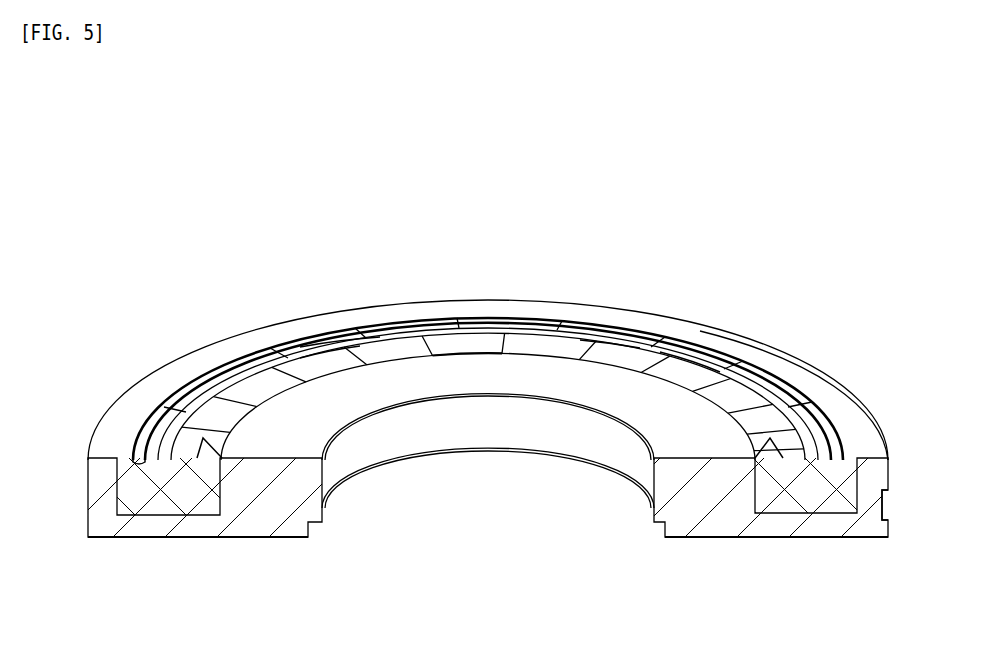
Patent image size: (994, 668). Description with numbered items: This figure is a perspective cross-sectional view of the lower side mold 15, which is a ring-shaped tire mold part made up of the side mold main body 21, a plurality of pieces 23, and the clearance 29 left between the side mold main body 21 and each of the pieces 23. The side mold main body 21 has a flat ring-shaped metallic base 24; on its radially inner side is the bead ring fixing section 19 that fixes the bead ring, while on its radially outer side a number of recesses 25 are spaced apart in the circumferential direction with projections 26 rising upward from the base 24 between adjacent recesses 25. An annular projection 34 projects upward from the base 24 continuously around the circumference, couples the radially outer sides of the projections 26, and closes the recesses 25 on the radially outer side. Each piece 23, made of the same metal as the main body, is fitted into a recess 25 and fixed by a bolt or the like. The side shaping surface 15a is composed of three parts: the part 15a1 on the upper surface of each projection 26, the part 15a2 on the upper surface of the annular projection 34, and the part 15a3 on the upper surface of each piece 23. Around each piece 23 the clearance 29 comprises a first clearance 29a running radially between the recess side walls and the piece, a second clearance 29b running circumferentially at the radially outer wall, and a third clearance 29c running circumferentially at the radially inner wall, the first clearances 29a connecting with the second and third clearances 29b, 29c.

The lower side mold 15 is at (502, 85).
The side shaping surface 15a is at (748, 352).
The part of the side shaping surface 15a1 is at (343, 320).
The part of the side shaping surface 15a2 is at (684, 332).
The part of the side shaping surface 15a3 is at (607, 345).
The bead ring fixing section 19 is at (582, 378).
The side mold main body 21 is at (183, 546).
The piece 23 is at (306, 372).
The base 24 is at (360, 456).
The recess 25 is at (842, 520).
The projection 26 is at (375, 323).
The clearance 29 is at (488, 389).
The first clearance 29a is at (505, 317).
The second clearance 29b is at (170, 412).
The third clearance 29c is at (343, 362).
The annular projection 34 is at (801, 362).